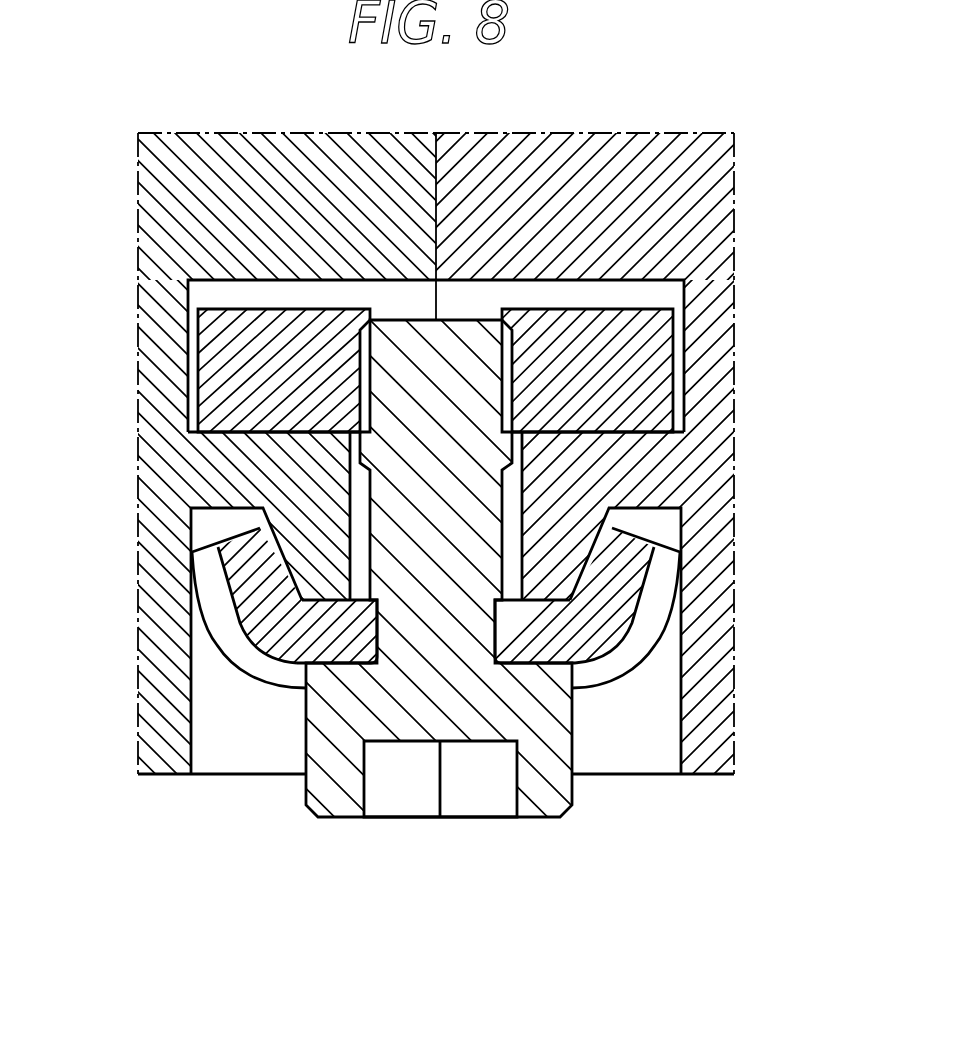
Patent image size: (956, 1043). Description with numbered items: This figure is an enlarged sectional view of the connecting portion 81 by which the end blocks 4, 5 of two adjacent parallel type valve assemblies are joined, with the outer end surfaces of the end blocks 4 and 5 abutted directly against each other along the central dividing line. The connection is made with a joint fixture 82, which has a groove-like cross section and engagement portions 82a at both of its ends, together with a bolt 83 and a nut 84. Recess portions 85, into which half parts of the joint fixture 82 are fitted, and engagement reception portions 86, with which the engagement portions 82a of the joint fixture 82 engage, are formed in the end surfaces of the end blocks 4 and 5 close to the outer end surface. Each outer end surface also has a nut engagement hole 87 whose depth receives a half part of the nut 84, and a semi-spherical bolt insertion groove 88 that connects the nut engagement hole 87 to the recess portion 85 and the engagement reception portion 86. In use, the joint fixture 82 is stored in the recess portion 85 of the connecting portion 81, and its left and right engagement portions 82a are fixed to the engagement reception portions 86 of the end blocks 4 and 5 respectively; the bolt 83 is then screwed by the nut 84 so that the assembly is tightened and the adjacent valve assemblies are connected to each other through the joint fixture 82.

The end block 4 is at (308, 148).
The end block 5 is at (596, 148).
The connecting portion 81 is at (229, 814).
The joint fixture 82 is at (343, 635).
The engagement portion 82a is at (270, 595).
The bolt 83 is at (542, 797).
The nut 84 is at (625, 360).
The recess portion 85 is at (196, 720).
The engagement reception portion 86 is at (323, 568).
The nut engagement hole 87 is at (222, 283).
The bolt insertion groove 88 is at (360, 493).